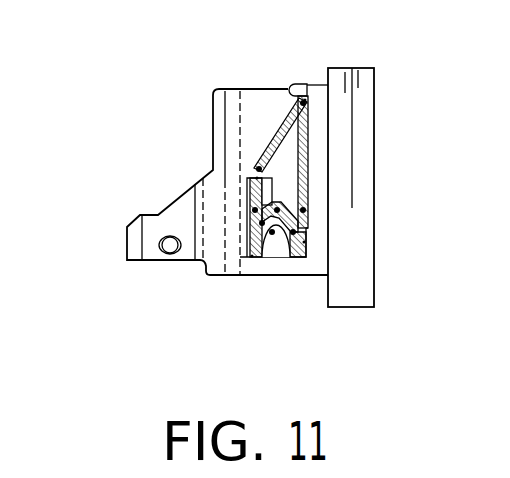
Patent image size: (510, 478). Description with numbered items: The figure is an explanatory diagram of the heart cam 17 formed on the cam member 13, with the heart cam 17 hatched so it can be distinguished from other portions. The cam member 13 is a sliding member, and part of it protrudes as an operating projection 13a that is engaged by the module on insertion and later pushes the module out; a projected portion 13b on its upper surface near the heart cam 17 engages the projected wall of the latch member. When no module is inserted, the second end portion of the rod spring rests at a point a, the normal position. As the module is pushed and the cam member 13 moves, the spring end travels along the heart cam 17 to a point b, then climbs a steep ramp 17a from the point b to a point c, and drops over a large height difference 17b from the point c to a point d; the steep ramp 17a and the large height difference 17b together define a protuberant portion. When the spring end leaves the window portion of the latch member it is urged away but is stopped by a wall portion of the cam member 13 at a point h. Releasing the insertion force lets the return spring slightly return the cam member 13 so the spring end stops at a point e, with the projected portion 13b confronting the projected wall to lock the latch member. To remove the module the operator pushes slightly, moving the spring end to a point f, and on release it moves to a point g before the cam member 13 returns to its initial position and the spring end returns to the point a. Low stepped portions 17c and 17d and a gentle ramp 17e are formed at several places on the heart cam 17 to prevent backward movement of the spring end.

The cam member 13 is at (358, 124).
The operating projection 13a is at (135, 245).
The projected portion 13b is at (291, 85).
The heart cam 17 is at (283, 152).
The steep ramp 17a is at (260, 182).
The large height difference 17b is at (261, 222).
The low stepped portion 17c is at (257, 258).
The low stepped portion 17d is at (307, 146).
The gentle ramp 17e is at (307, 178).
The point a is at (305, 103).
The point b is at (257, 178).
The point c is at (254, 209).
The point d is at (253, 257).
The point e is at (292, 236).
The point f is at (305, 242).
The point g is at (305, 209).
The point h is at (271, 236).